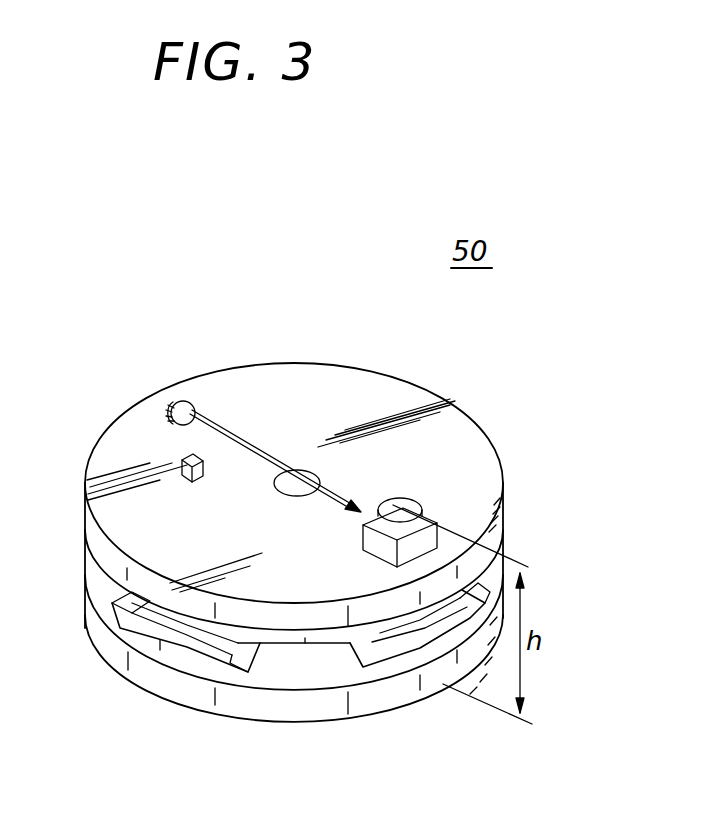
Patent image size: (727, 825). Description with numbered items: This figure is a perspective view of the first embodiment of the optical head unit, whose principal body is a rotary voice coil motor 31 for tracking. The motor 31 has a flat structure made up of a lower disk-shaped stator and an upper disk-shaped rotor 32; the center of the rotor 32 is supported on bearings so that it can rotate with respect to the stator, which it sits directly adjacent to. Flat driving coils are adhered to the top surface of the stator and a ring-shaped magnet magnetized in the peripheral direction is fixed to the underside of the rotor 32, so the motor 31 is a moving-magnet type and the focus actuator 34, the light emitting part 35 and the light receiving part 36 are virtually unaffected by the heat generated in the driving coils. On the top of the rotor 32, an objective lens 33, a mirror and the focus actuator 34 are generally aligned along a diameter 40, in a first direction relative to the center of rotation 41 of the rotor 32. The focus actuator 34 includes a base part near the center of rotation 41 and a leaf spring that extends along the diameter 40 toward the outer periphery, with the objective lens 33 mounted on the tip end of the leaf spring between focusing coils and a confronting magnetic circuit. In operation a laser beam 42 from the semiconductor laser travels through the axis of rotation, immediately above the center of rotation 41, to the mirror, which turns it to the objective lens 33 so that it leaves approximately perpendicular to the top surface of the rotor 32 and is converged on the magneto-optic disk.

The rotary voice coil motor 31 is at (506, 515).
The rotor 32 is at (498, 447).
The objective lens 33 is at (413, 497).
The focus actuator 34 is at (416, 552).
The light emitting part 35 is at (177, 400).
The light receiving part 36 is at (178, 480).
The diameter 40 is at (250, 460).
The center of rotation 41 is at (298, 496).
The laser beam 42 is at (247, 445).